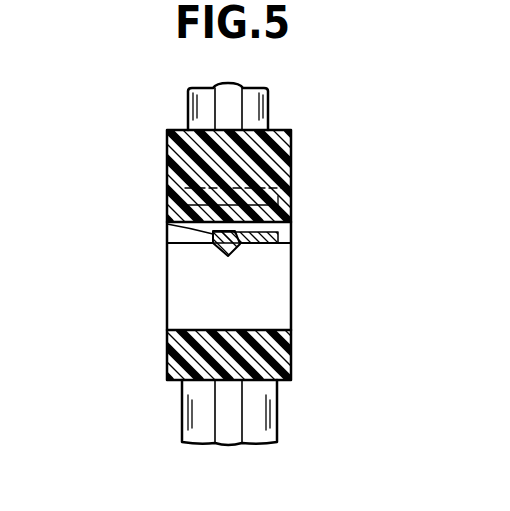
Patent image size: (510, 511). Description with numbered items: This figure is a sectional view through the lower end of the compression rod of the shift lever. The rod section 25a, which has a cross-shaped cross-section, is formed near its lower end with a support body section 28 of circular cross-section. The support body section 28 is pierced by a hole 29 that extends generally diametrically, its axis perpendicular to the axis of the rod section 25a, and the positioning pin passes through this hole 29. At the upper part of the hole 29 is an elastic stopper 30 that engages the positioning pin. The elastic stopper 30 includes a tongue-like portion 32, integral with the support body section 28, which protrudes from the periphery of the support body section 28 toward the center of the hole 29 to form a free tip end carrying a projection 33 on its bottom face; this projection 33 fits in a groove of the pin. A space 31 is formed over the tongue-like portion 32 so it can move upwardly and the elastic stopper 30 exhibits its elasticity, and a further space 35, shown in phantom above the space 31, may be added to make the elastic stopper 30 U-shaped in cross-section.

The rod section 25a is at (258, 101).
The support body section 28 is at (292, 157).
The hole 29 is at (278, 305).
The elastic stopper 30 is at (208, 250).
The space 31 is at (278, 222).
The tongue-like portion 32 is at (170, 224).
The projection 33 is at (240, 246).
The further space 35 is at (291, 189).